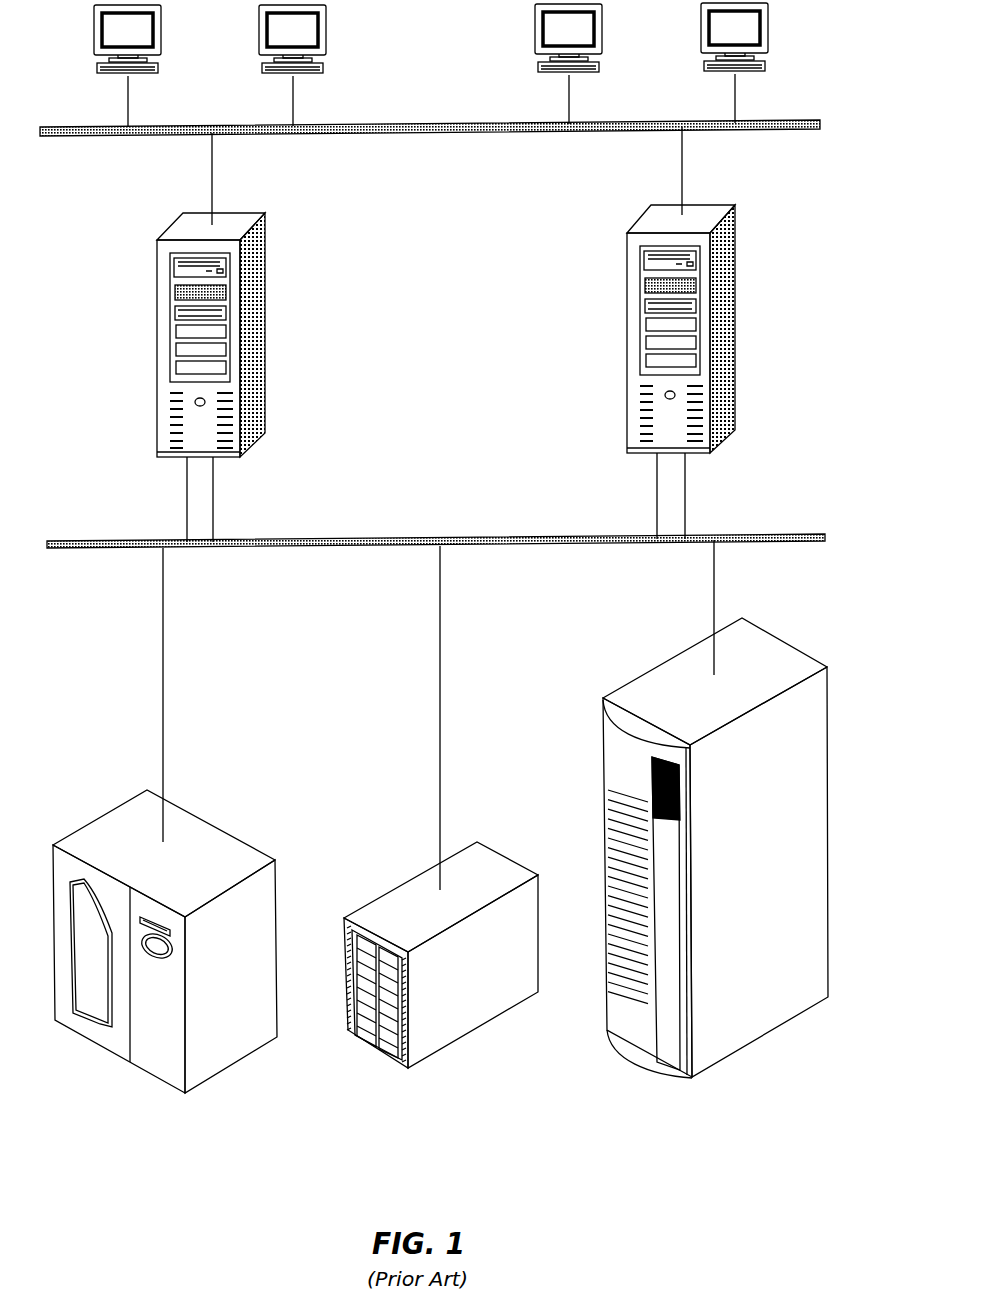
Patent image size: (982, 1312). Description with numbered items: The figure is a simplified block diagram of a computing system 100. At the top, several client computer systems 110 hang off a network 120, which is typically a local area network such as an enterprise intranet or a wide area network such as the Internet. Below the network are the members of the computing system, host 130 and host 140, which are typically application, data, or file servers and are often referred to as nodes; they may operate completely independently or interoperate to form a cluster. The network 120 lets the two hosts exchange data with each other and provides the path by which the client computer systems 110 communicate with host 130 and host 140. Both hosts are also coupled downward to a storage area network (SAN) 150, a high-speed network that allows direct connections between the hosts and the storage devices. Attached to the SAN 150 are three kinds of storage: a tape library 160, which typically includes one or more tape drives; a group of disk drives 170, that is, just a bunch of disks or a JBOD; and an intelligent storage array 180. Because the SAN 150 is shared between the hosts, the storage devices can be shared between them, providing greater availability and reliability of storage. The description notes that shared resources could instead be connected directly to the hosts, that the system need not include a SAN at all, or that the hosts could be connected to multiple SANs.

The computing system 100 is at (703, 1232).
The client computer systems 110 is at (770, 28).
The network 120 is at (786, 131).
The host 130 is at (157, 340).
The host 140 is at (626, 335).
The storage area network (SAN) 150 is at (740, 532).
The tape library 160 is at (202, 842).
The group of disk drives (JBOD) 170 is at (480, 863).
The intelligent storage array 180 is at (828, 863).